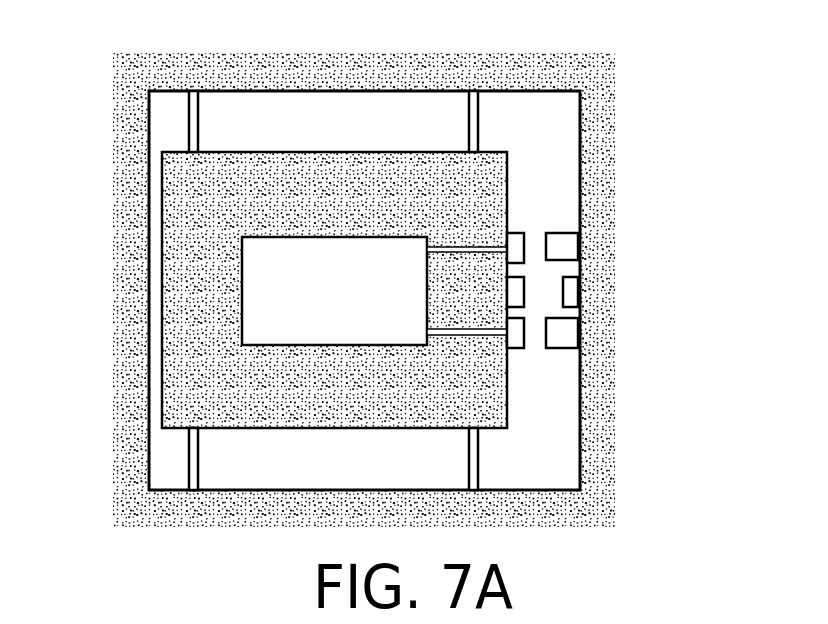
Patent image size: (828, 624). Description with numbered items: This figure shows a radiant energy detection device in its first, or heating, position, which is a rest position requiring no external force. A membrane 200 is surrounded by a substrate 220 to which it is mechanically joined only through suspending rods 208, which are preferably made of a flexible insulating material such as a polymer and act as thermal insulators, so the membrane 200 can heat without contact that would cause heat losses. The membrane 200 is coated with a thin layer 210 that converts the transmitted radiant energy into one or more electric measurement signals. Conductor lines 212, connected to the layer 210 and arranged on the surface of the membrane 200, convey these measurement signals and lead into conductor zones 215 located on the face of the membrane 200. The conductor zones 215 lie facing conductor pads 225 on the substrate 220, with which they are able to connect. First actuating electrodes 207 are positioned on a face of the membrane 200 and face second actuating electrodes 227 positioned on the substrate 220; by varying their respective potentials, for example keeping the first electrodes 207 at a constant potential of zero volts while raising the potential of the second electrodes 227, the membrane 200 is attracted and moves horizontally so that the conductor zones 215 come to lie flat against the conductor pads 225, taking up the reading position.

The membrane 200 is at (192, 230).
The first actuating electrodes 207 is at (518, 290).
The rods 208 is at (192, 127).
The thin layer 210 is at (273, 310).
The conductor lines 212 is at (473, 255).
The conductor zones 215 is at (517, 345).
The substrate 220 is at (612, 118).
The conductor pads 225 is at (563, 335).
The second actuating electrodes 227 is at (572, 295).